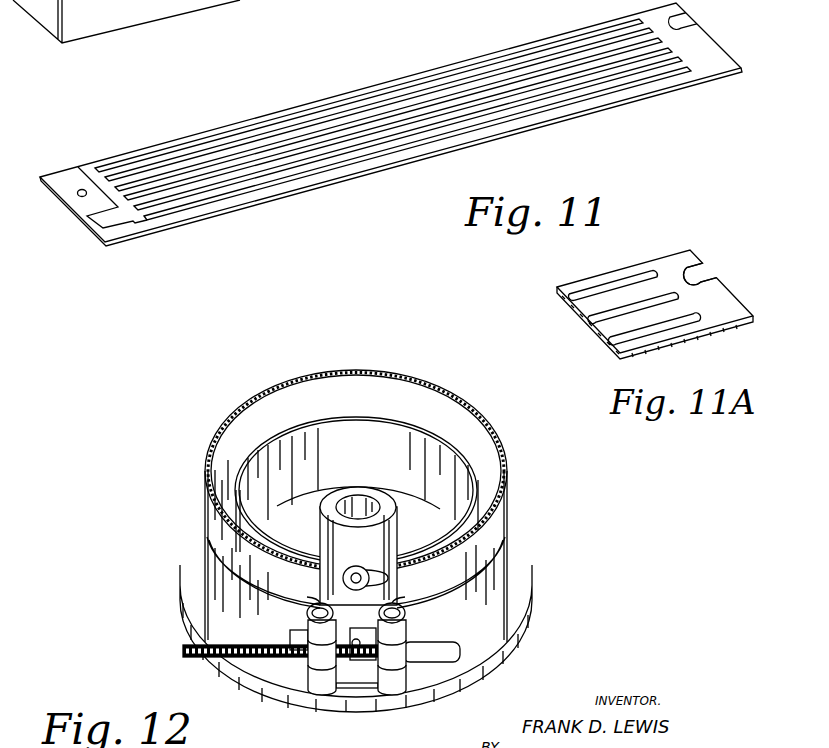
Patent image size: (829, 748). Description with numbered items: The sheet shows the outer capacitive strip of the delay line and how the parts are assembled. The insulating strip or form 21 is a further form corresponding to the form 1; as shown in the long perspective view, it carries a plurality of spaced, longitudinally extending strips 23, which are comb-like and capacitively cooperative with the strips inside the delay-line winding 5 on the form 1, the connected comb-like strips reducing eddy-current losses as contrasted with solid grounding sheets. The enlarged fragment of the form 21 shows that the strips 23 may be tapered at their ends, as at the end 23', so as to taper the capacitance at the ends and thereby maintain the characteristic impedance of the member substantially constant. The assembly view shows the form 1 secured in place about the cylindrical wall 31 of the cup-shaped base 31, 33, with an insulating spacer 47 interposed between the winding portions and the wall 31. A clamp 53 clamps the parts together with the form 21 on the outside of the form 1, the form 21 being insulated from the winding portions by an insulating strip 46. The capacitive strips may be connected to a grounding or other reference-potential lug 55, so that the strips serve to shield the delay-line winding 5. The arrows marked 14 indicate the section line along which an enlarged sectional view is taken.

In FIG. 11, the insulating strip or form 21 is at (117, 236).
In FIG. 11A, the insulating strip or form 21 is at (688, 260).
In FIG. 12, the insulating strip or form 21 is at (467, 553).
In FIG. 11, the spaced longitudinally extending strips 23 is at (393, 132).
In FIG. 11A, the spaced longitudinally extending strips 23 is at (635, 281).
In FIG. 11A, the tapered end 23' is at (714, 264).
In FIG. 12, the insulating spacer 47 is at (455, 392).
In FIG. 12, the cylindrical wall 31 is at (462, 452).
In FIG. 12, the delay-line winding 5 is at (500, 478).
In FIG. 12, the form 1 is at (508, 506).
In FIG. 12, the insulating strip 46 is at (490, 548).
In FIG. 12, the clamp 53 is at (230, 594).
In FIG. 12, the cup-shaped base 33 is at (522, 610).
In FIG. 12, the grounding or reference-potential lug 55 is at (360, 568).
In FIG. 12, the section line 14— 14 is at (310, 585).